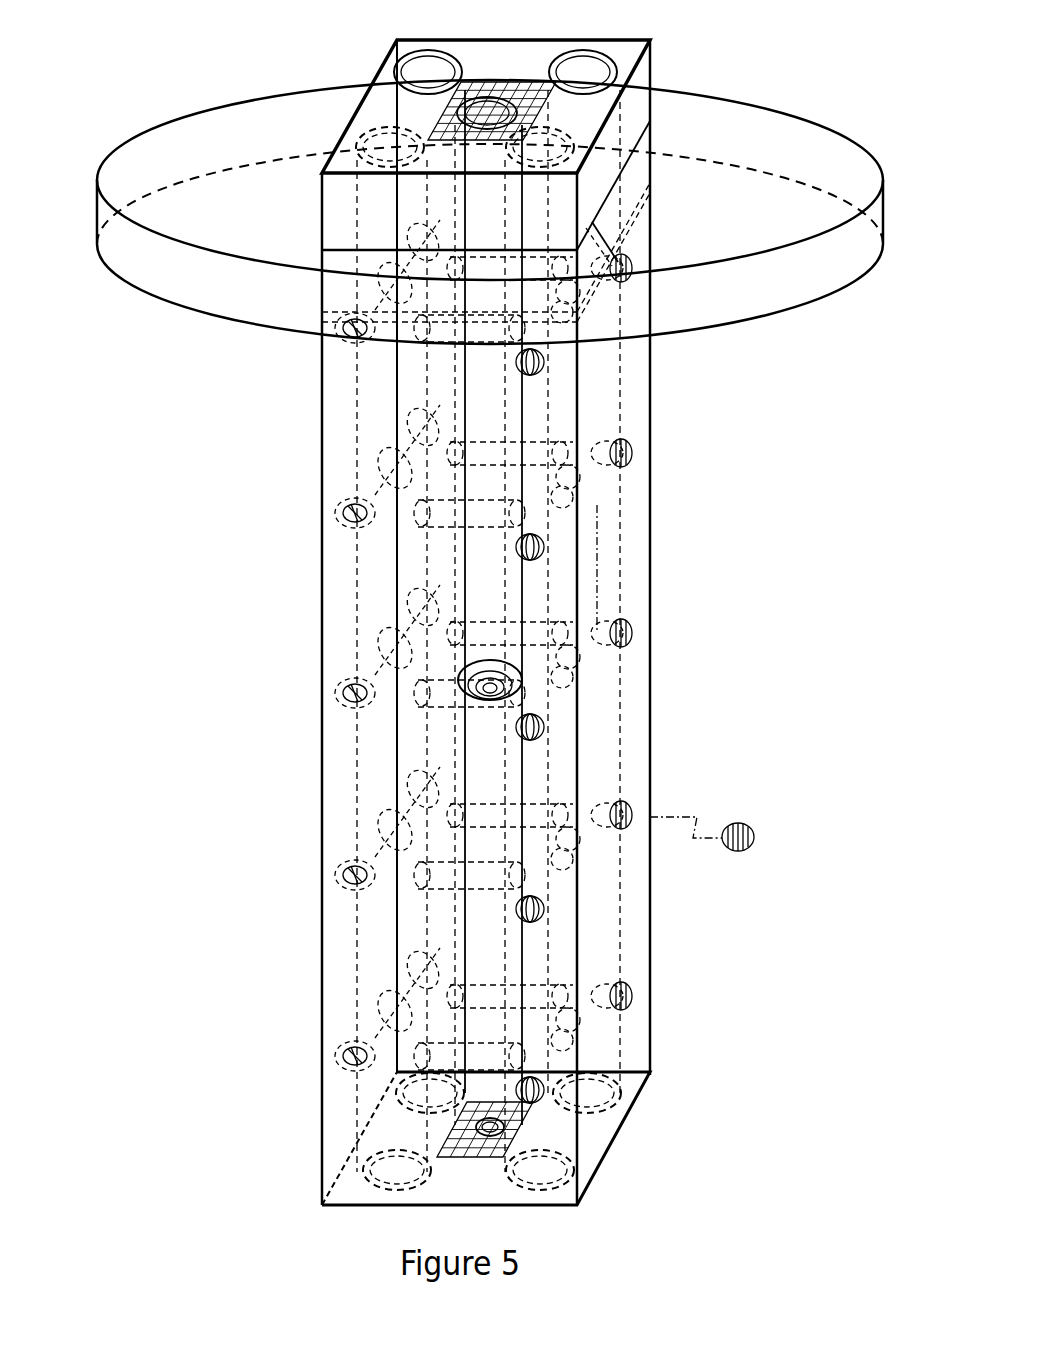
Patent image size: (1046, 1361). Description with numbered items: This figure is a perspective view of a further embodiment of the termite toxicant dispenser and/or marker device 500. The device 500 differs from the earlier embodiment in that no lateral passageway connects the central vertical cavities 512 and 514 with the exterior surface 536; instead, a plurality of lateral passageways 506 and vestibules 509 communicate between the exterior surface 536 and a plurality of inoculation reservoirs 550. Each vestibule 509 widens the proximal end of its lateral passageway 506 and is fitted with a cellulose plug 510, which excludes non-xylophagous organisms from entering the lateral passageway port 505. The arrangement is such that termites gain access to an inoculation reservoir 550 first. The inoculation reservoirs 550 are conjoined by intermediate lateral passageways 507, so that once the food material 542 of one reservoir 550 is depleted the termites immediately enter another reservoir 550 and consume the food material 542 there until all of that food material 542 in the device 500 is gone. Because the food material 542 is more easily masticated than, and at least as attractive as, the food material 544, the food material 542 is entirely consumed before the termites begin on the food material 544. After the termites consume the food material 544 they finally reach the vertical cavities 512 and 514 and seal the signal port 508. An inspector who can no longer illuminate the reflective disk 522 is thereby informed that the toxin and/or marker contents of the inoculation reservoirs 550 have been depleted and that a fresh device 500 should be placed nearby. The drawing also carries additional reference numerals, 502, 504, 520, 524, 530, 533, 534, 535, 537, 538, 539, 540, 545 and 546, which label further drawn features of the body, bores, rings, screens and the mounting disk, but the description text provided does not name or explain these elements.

The device 500 is at (880, 23).
The housing block 502 is at (650, 514).
The gas inlet port 504 is at (613, 447).
The lateral passageway port 505 is at (610, 452).
The lateral passageway 506 is at (607, 443).
The intermediate lateral passageway 507 is at (583, 857).
The signal port 508 is at (483, 88).
The vestibule 509 is at (627, 803).
The cellulose plug 510 is at (728, 850).
The vertical cavity 512 is at (523, 397).
The vertical cavity 514 is at (473, 742).
The spring 520 is at (545, 722).
The reflective disk 522 is at (522, 680).
The ring 524 is at (490, 673).
The aperture upper edge 530 is at (297, 300).
The bottom screen mesh 533 is at (492, 1157).
The angled passage 534 is at (628, 272).
The groove 535 is at (652, 158).
The exterior surface 536 is at (322, 624).
The mounting disk 537 is at (312, 108).
The aperture lower edge 538 is at (308, 322).
The top center ring 539 is at (483, 105).
The bottom center ring 540 is at (430, 1133).
The food material 542 is at (597, 505).
The food material 544 is at (627, 565).
The top bore 545 is at (382, 103).
The bottom bore 546 is at (352, 1207).
The inoculation reservoir 550 is at (357, 638).